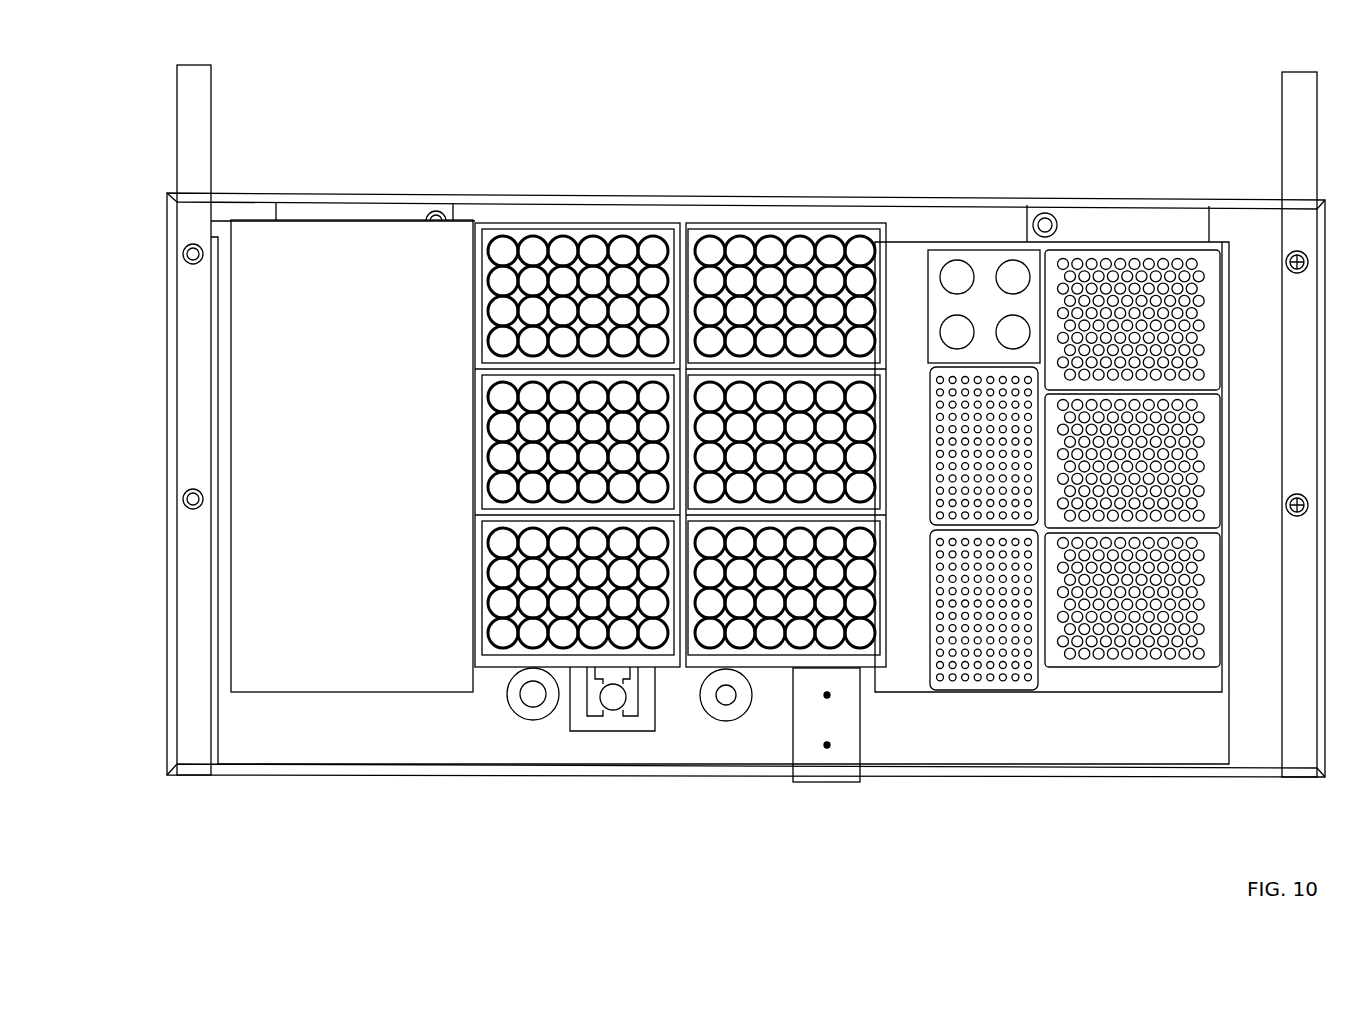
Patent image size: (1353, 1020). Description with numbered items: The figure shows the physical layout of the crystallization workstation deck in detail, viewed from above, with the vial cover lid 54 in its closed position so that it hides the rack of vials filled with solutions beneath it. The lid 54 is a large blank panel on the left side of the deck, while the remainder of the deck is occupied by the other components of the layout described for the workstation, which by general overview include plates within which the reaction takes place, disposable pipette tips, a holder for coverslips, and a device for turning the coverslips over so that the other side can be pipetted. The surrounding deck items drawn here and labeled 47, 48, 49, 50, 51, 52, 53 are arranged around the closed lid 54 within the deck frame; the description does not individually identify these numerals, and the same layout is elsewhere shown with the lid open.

The microtiter plate holders 47 is at (1137, 669).
The tube racks 48 is at (985, 691).
The reagent bottle holder 49 is at (977, 248).
The connector block 50 is at (827, 785).
The knob 51 is at (730, 721).
The clamp fixture 52 is at (597, 718).
The knob 53 is at (527, 721).
The vial cover lid 54 is at (328, 220).